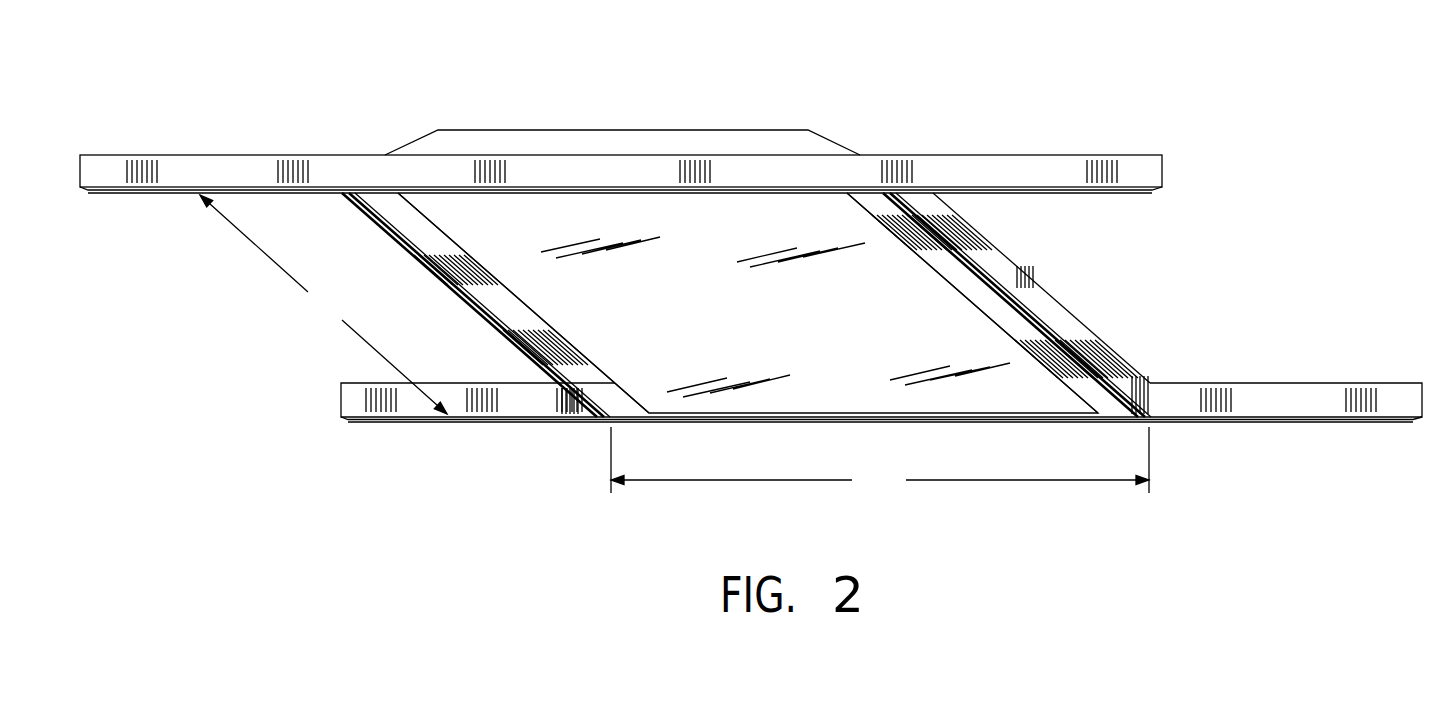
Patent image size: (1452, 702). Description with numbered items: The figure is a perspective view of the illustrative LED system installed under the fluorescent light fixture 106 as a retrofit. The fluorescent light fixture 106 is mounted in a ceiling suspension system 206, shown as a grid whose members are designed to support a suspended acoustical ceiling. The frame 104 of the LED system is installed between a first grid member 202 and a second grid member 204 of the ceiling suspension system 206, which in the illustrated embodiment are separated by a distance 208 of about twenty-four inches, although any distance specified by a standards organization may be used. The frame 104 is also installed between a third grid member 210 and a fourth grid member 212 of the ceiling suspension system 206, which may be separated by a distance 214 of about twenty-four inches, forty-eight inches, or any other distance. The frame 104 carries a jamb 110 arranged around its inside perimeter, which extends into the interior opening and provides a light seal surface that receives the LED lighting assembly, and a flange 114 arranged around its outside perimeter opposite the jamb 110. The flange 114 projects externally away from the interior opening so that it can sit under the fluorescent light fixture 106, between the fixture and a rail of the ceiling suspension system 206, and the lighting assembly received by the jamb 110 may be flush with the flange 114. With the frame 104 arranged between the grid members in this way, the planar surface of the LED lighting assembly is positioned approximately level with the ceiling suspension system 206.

The ceiling suspension system 206 is at (272, 100).
The second grid member 204 is at (87, 145).
The first grid member 202 is at (333, 428).
The fluorescent light fixture 106 is at (438, 128).
The fourth grid member 212 is at (457, 310).
The third grid member 210 is at (1080, 302).
The frame 104 is at (530, 370).
The jamb 110 is at (598, 382).
The flange 114 is at (412, 218).
The distance 208 is at (323, 304).
The distance 214 is at (880, 461).